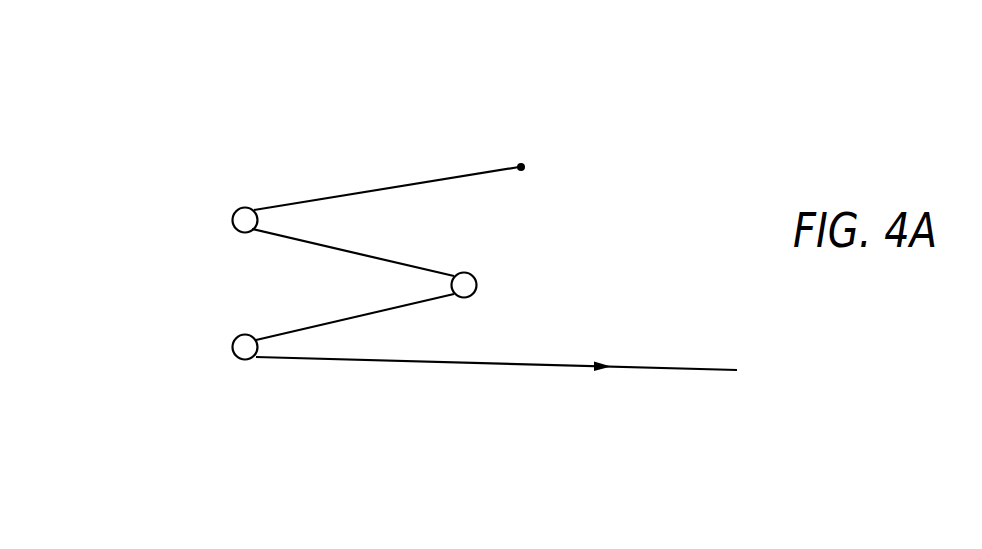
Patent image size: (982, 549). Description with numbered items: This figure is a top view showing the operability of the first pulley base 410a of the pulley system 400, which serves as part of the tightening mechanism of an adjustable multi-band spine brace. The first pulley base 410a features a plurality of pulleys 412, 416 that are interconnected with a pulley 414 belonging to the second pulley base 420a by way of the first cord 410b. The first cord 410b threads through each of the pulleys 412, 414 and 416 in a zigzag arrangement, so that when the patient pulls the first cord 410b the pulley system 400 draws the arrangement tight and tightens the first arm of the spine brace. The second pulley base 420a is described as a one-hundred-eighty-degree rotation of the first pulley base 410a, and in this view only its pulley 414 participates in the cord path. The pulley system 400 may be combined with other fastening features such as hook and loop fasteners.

The pulley system 400 is at (600, 143).
The first pulley base 410a is at (258, 388).
The first cord 410b is at (429, 158).
The pulley 412 is at (233, 222).
The pulley 414 is at (475, 280).
The pulley 416 is at (233, 348).
The second pulley base 420a is at (536, 296).